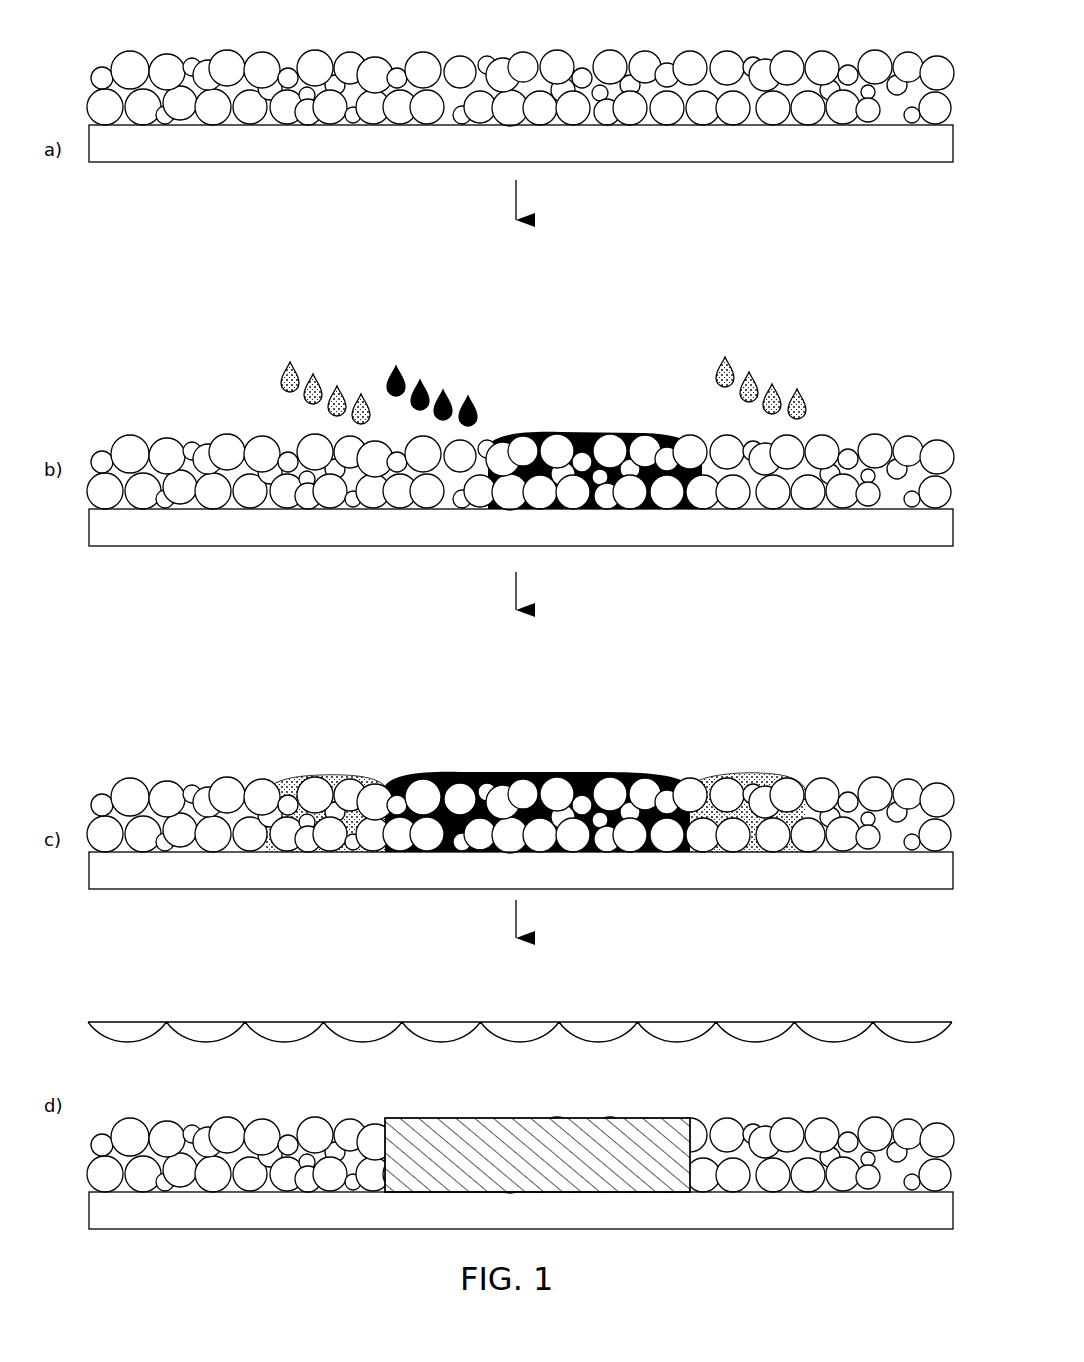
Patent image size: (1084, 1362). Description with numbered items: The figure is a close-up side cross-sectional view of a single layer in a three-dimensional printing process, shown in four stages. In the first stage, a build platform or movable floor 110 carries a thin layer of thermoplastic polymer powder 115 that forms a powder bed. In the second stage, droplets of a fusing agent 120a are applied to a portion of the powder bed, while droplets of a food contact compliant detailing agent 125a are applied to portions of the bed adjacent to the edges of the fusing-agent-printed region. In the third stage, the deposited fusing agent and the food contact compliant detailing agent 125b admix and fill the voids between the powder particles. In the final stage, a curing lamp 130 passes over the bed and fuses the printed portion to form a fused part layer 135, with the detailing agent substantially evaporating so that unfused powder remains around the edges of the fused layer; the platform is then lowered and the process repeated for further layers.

The build platform or movable floor 110 is at (540, 153).
The thermoplastic polymer powder 115 is at (130, 66).
The droplets of fusing agent 120a is at (393, 378).
The droplets of food contact compliant detailing agent 125a is at (283, 372).
The food contact compliant detailing agent 125b is at (286, 775).
The curing lamp 130 is at (283, 1030).
The fused part layer 135 is at (580, 1148).